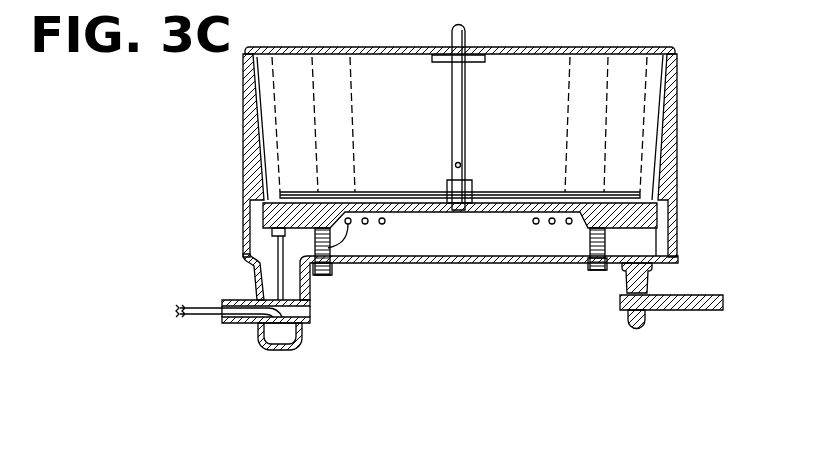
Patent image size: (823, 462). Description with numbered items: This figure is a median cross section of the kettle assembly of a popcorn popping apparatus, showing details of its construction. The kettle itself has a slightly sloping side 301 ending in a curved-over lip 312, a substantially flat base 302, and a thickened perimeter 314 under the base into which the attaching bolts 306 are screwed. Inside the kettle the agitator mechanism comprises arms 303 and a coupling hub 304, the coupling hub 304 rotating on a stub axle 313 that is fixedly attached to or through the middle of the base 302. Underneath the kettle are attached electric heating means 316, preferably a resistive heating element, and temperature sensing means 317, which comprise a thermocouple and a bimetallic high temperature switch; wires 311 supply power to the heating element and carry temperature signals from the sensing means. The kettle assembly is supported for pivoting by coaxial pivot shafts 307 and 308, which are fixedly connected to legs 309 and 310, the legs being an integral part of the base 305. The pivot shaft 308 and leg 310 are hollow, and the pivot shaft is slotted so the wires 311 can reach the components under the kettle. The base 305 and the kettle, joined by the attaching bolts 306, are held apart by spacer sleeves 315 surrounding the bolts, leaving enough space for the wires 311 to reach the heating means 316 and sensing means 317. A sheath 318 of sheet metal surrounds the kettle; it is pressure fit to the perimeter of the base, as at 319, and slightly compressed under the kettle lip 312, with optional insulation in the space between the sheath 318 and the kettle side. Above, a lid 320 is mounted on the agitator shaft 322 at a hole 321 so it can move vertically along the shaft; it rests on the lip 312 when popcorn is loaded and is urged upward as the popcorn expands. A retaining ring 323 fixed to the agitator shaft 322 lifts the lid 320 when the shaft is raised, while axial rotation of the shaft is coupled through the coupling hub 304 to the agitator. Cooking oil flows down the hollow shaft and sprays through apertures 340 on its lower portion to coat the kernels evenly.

The side 301 is at (664, 91).
The base 302 is at (656, 184).
The arms 303 is at (418, 192).
The coupling hub 304 is at (474, 185).
The base 305 is at (440, 264).
The attaching bolts 306 is at (321, 278).
The pivot shaft 307 is at (676, 311).
The pivot shaft 308 is at (240, 325).
The leg 309 is at (630, 326).
The leg 310 is at (280, 351).
The wires 311 is at (200, 308).
The lip 312 is at (678, 54).
The stub axle 313 is at (457, 210).
The thickened perimeter 314 is at (655, 216).
The spacer sleeves 315 is at (638, 244).
The electric heating means 316 is at (382, 225).
The temperature sensing means 317 is at (272, 233).
The sheath 318 is at (243, 151).
The pressure fit location 319 is at (245, 263).
The lid 320 is at (610, 46).
The hole 321 is at (452, 44).
The agitator shaft 322 is at (467, 46).
The retaining ring 323 is at (476, 63).
The apertures 340 is at (456, 164).